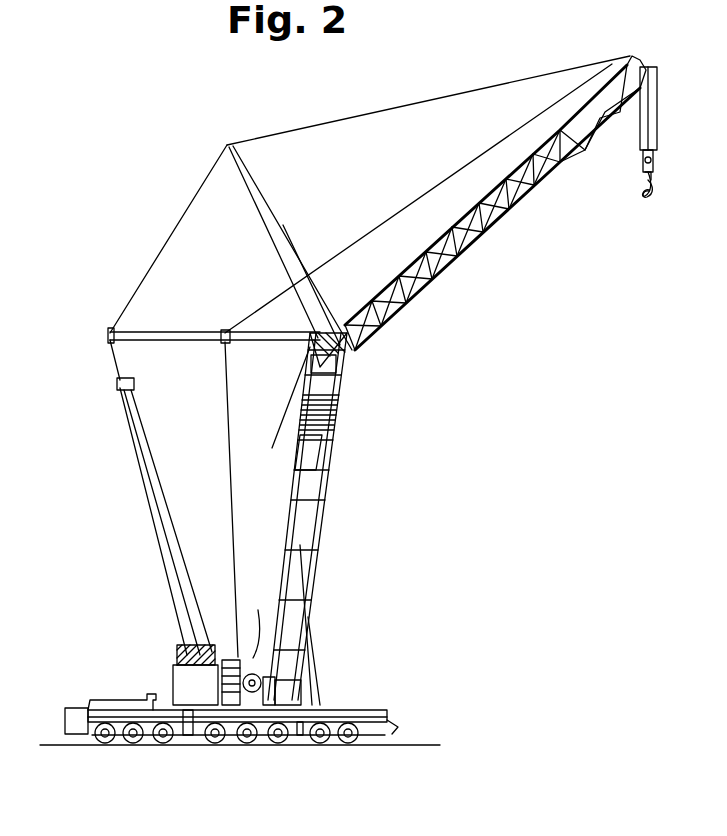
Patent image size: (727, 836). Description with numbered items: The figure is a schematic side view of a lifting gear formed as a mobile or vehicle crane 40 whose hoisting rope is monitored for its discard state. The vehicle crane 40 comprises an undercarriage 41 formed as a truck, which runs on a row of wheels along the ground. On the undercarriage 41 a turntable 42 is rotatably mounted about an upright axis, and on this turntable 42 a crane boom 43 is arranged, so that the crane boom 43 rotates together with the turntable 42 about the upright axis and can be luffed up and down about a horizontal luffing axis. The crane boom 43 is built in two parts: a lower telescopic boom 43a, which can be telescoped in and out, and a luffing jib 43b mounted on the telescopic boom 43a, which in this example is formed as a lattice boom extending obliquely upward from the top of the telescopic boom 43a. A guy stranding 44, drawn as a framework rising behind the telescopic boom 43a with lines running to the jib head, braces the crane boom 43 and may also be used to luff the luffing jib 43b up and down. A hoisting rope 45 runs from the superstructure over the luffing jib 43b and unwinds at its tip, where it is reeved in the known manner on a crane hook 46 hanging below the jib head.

The vehicle crane 40 is at (383, 525).
The undercarriage 41 is at (330, 746).
The turntable 42 is at (327, 683).
The crane boom 43 is at (337, 442).
The telescopic boom 43a is at (322, 492).
The luffing jib 43b is at (450, 258).
The guy stranding 44 is at (140, 284).
The hoisting rope 45 is at (410, 203).
The crane hook 46 is at (648, 188).